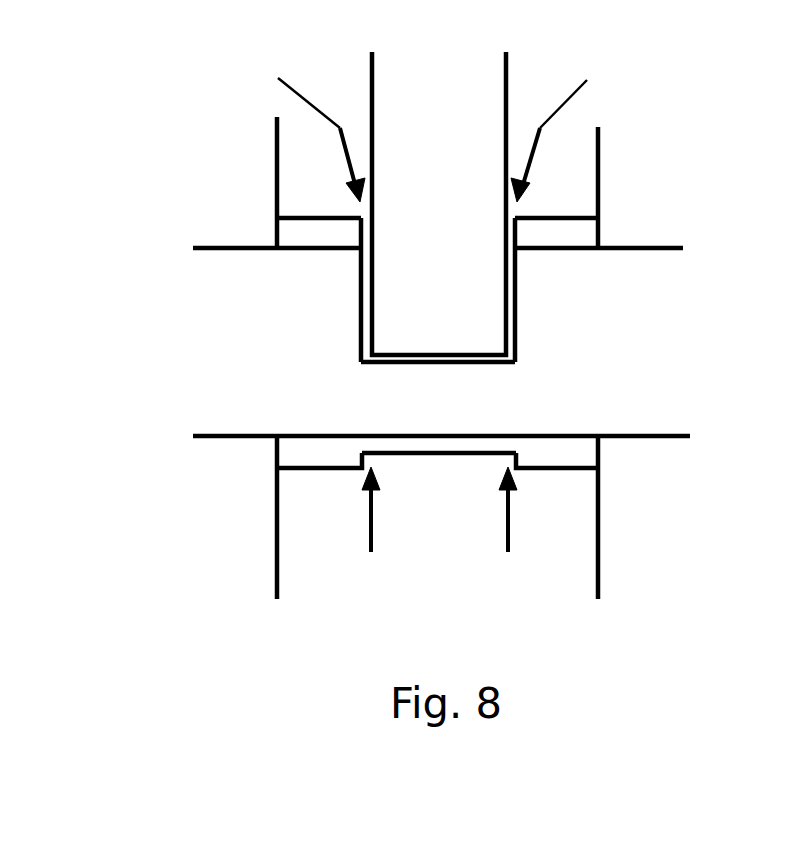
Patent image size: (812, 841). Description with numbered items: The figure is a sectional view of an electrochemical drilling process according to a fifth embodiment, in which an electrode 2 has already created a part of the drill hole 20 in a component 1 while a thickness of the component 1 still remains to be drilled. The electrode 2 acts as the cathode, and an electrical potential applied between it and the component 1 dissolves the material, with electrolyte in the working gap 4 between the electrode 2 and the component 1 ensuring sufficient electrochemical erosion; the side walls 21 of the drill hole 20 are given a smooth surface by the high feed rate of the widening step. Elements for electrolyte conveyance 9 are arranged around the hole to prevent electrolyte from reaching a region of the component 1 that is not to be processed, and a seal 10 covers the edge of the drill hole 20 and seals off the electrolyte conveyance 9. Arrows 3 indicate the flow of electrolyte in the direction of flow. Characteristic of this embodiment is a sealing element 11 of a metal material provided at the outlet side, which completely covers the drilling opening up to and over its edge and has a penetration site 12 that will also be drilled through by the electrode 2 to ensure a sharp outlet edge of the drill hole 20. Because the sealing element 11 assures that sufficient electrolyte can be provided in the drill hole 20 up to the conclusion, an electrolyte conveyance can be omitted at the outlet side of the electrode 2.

The component 1 is at (603, 286).
The electrode 2 is at (413, 305).
The pressing direction arrows 3 is at (542, 599).
The working gap 4 is at (510, 335).
The electrolyte conveyance 9 is at (277, 144).
The seal 10 is at (315, 236).
The sealing element 11 is at (313, 458).
The penetration site 12 is at (420, 457).
The drill hole 20 is at (360, 363).
The side walls 21 is at (358, 333).